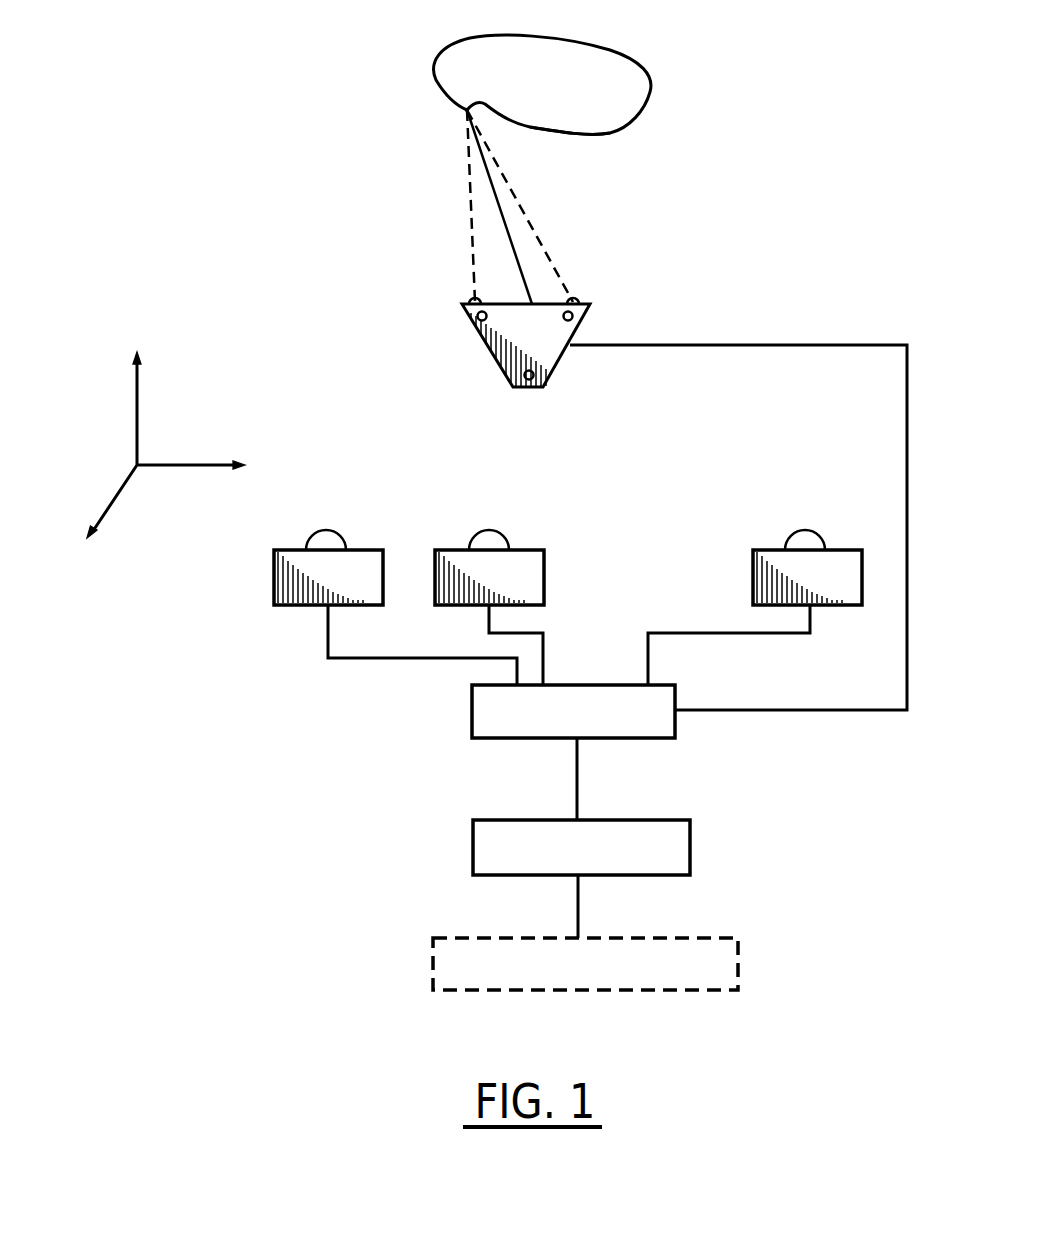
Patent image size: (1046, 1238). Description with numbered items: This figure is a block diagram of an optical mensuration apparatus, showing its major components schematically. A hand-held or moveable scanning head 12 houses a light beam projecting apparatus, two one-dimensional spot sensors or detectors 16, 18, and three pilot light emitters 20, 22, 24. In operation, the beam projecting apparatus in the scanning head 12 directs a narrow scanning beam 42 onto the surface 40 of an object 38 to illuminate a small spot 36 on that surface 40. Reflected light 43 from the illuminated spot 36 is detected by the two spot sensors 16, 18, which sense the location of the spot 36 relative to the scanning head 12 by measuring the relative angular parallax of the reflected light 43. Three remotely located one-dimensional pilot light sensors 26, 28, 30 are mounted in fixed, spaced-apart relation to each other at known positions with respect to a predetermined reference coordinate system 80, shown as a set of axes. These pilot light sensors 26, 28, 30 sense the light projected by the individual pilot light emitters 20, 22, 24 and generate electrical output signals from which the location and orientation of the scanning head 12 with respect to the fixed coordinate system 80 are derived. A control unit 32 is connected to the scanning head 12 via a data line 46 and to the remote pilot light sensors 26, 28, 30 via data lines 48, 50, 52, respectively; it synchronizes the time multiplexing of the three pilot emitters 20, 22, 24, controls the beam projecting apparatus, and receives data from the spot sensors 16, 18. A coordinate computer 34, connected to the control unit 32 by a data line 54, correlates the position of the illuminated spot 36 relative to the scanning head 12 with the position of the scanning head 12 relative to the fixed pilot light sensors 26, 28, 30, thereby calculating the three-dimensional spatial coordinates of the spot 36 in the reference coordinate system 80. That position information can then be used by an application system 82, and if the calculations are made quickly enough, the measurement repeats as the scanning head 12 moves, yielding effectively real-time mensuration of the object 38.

The scanning head 12 is at (490, 355).
The one-dimensional spot sensor 16 is at (475, 302).
The one-dimensional spot sensor 18 is at (573, 302).
The pilot light emitter 20 is at (482, 316).
The pilot light emitter 22 is at (568, 316).
The pilot light emitter 24 is at (548, 372).
The one-dimensional pilot light sensor 26 is at (274, 580).
The one-dimensional pilot light sensor 28 is at (544, 580).
The one-dimensional pilot light sensor 30 is at (753, 579).
The control unit 32 is at (472, 720).
The coordinate computer 34 is at (473, 848).
The illuminated spot 36 is at (467, 110).
The object 38 is at (652, 74).
The surface 40 is at (613, 133).
The scanning beam 42 is at (510, 232).
The reflected light 43 is at (472, 207).
The data line 46 is at (907, 453).
The data line 48 is at (328, 622).
The data line 50 is at (489, 620).
The data line 52 is at (740, 633).
The data line 54 is at (577, 788).
The reference coordinate system 80 is at (124, 431).
The application system 82 is at (435, 938).